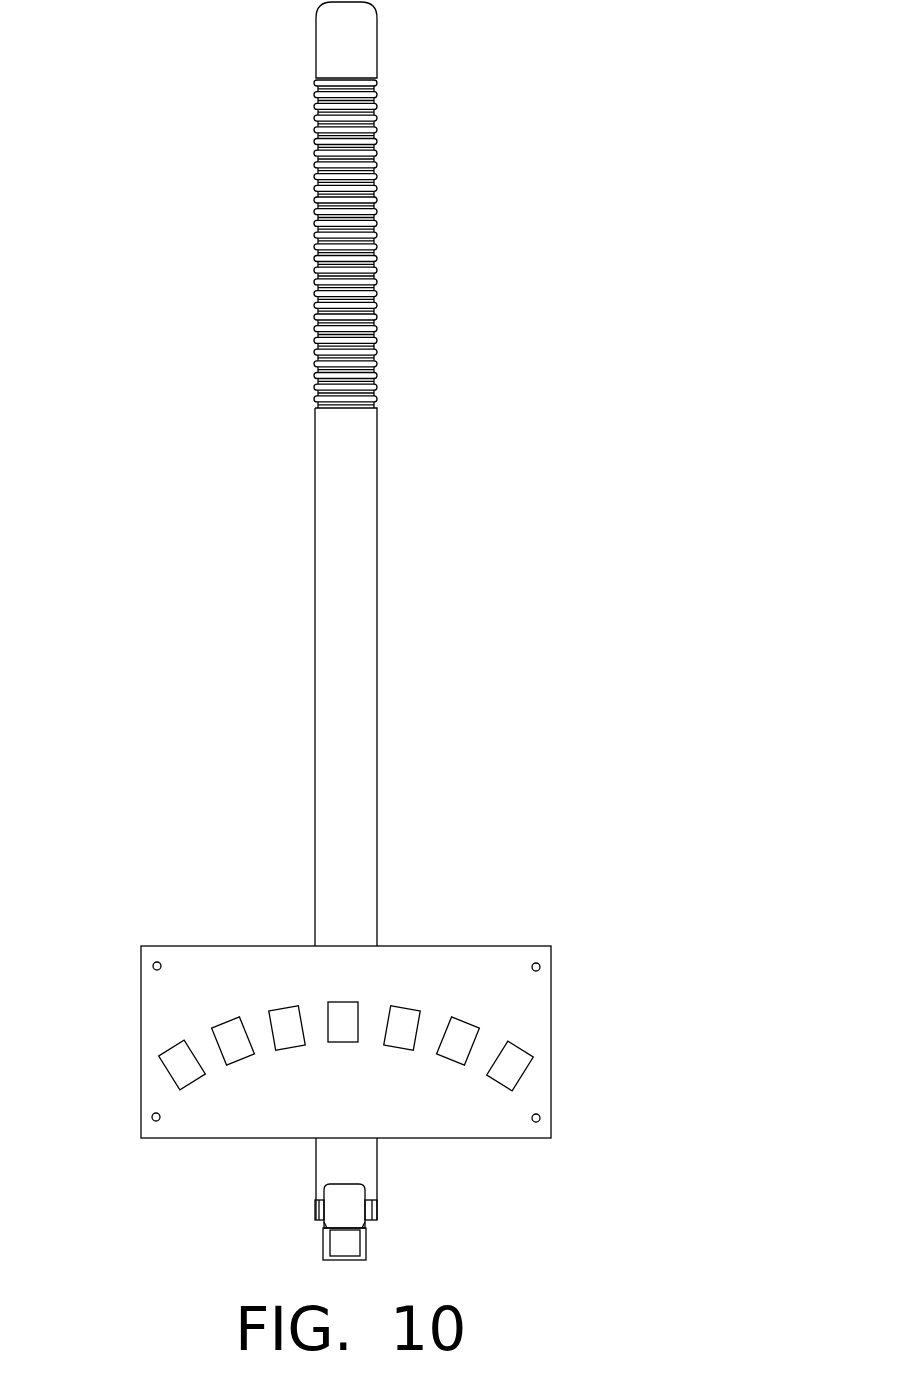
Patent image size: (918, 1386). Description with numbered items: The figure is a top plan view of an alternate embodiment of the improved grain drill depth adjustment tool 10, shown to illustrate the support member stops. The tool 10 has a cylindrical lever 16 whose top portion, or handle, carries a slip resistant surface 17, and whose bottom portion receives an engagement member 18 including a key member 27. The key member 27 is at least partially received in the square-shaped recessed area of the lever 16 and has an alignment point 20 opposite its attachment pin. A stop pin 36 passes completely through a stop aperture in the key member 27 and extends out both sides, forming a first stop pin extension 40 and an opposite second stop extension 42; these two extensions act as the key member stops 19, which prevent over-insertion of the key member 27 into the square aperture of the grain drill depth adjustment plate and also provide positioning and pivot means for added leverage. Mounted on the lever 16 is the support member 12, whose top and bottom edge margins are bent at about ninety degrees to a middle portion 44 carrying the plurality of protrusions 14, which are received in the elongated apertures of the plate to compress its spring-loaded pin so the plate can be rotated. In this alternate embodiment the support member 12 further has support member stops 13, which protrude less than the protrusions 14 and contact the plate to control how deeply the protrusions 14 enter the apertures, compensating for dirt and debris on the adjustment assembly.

The improved grain drill depth adjustment tool 10 is at (446, 736).
The support member 12 is at (476, 969).
The support member stops 13 is at (153, 966).
The plurality of protrusions 14 is at (283, 1020).
The lever 16 is at (364, 590).
The slip resistant surface 17 is at (378, 353).
The engagement member 18 is at (400, 1240).
The key member stops 19 is at (377, 1197).
The alignment point 20 is at (338, 1248).
The key member 27 is at (338, 1203).
The stop pin 36 is at (372, 1220).
The first stop pin extension 40 is at (375, 1207).
The second stop extension 42 is at (320, 1213).
The middle portion 44 is at (385, 975).